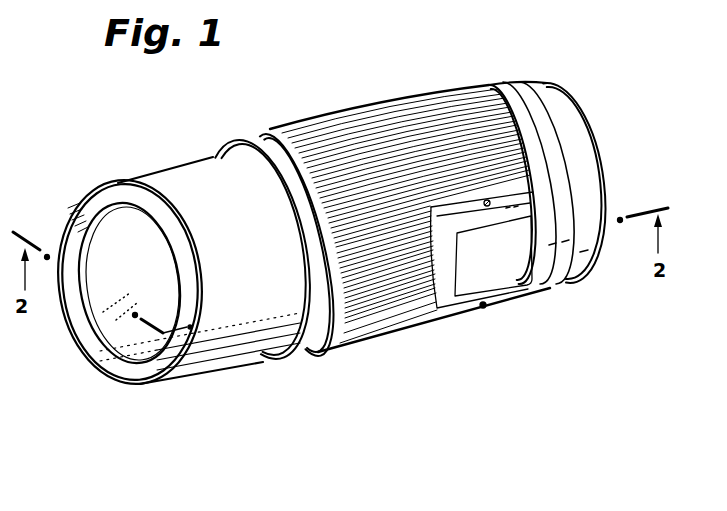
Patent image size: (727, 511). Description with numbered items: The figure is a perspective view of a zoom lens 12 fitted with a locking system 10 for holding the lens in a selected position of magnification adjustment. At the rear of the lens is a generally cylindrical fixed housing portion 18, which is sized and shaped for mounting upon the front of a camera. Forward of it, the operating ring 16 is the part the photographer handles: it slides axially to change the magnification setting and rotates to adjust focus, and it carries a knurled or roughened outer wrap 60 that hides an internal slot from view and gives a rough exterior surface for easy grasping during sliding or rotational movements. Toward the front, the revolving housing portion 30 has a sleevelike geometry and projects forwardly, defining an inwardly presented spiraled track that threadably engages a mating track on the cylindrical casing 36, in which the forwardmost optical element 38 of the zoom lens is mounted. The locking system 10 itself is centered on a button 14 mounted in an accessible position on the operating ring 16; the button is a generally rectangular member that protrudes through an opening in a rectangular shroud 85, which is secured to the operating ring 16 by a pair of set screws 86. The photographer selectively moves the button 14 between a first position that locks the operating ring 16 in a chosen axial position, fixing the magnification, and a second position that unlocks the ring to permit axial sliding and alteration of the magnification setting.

The locking system 10 is at (433, 341).
The zoom lens 12 is at (160, 401).
The button 14 is at (508, 272).
The operating ring 16 is at (363, 123).
The fixed housing portion 18 is at (563, 106).
The revolving housing portion 30 is at (182, 178).
The cylindrical casing 36 is at (67, 214).
The forwardmost optical element 38 is at (132, 337).
The outer wrap 60 is at (367, 324).
The rectangular shroud 85 is at (533, 193).
The set screws 86 is at (483, 309).